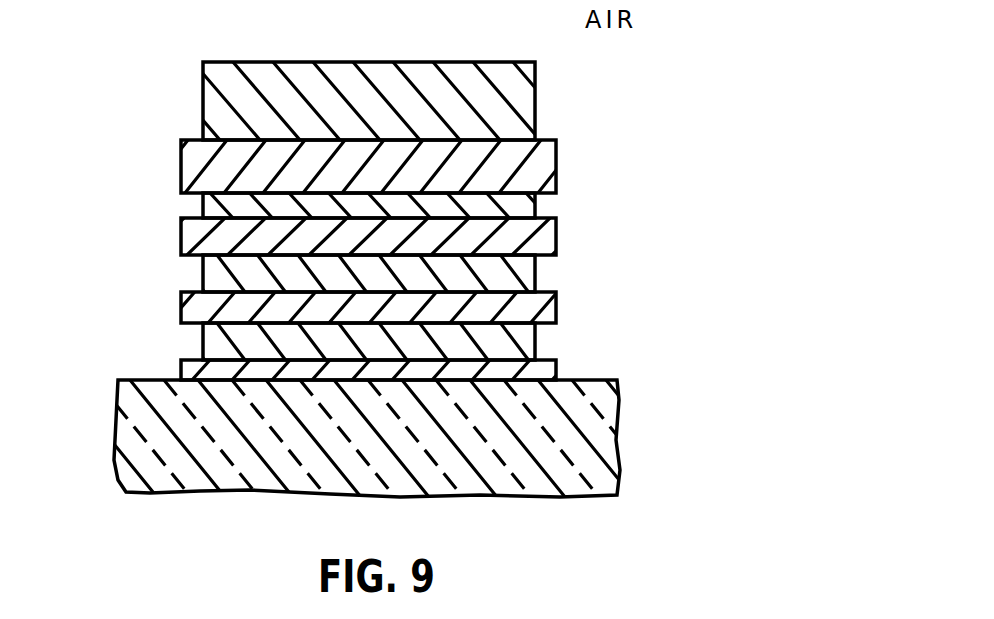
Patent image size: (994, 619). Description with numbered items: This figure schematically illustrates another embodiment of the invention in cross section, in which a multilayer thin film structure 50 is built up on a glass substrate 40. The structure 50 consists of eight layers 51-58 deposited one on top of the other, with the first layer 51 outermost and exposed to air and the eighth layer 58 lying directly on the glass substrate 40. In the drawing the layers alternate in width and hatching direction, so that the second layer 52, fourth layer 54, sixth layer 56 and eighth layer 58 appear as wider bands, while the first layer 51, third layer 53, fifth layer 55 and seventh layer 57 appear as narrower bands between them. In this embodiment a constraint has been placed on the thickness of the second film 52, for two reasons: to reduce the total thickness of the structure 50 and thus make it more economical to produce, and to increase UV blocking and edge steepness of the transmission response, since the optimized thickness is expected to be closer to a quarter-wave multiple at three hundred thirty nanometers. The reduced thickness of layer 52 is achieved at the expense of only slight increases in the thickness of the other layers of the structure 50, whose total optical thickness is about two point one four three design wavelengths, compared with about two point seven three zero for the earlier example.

The glass substrate 40 is at (137, 413).
The structure 50 is at (598, 192).
The first layer 51 is at (203, 103).
The second film 52 is at (178, 160).
The third layer 53 is at (203, 207).
The fourth layer 54 is at (178, 232).
The fifth layer 55 is at (203, 272).
The sixth layer 56 is at (178, 302).
The seventh layer 57 is at (203, 340).
The eighth layer 58 is at (178, 362).